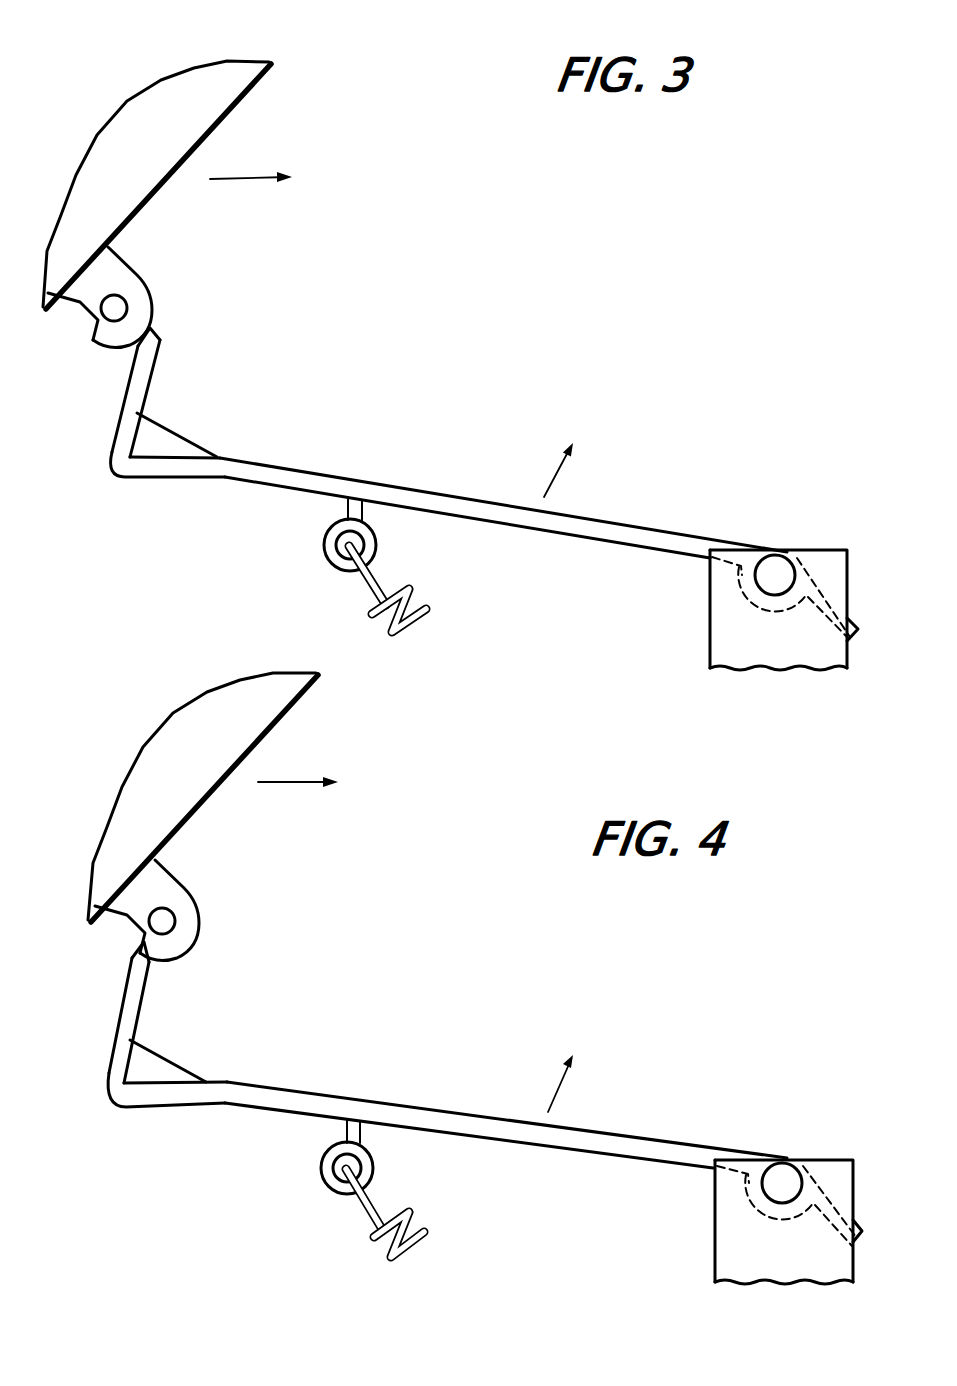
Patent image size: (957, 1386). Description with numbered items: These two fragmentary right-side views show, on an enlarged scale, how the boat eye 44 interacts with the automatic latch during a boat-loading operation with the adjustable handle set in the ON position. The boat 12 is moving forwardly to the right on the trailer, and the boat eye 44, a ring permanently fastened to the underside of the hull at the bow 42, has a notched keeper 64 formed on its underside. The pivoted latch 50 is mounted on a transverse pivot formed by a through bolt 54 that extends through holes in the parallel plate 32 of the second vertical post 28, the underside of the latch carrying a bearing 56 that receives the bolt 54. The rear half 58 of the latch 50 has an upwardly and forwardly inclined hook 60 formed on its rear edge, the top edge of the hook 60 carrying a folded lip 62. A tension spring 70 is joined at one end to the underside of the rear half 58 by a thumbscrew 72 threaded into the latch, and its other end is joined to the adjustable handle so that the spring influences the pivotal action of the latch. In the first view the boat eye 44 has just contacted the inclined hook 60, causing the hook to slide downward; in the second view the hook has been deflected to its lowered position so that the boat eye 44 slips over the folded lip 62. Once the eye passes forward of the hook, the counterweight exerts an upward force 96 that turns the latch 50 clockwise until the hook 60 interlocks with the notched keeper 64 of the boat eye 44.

In FIG. 3, the boat 12 is at (188, 167).
In FIG. 4, the boat 12 is at (235, 775).
In FIG. 3, the bow 42 is at (247, 100).
In FIG. 4, the bow 42 is at (298, 707).
In FIG. 3, the boat eye 44 is at (140, 277).
In FIG. 4, the boat eye 44 is at (192, 893).
In FIG. 3, the notched keeper 64 is at (92, 327).
In FIG. 4, the notched keeper 64 is at (130, 942).
In FIG. 3, the folded lip 62 is at (160, 350).
In FIG. 4, the folded lip 62 is at (154, 975).
In FIG. 3, the hook 60 is at (113, 430).
In FIG. 4, the hook 60 is at (112, 1010).
In FIG. 3, the pivoted latch 50 is at (682, 540).
In FIG. 4, the pivoted latch 50 is at (683, 1143).
In FIG. 4, the rear half 58 is at (623, 1137).
In FIG. 3, the upward force 96 is at (560, 472).
In FIG. 4, the upward force 96 is at (560, 1087).
In FIG. 3, the thumbscrew 72 is at (323, 537).
In FIG. 4, the thumbscrew 72 is at (320, 1175).
In FIG. 3, the tension spring 70 is at (417, 583).
In FIG. 4, the tension spring 70 is at (377, 1237).
In FIG. 3, the second vertical post 28 is at (765, 657).
In FIG. 4, the second vertical post 28 is at (797, 1270).
In FIG. 3, the parallel plate 32 is at (718, 657).
In FIG. 4, the parallel plate 32 is at (727, 1268).
In FIG. 3, the through bolt 54 is at (775, 573).
In FIG. 4, the through bolt 54 is at (782, 1180).
In FIG. 3, the bearing 56 is at (757, 613).
In FIG. 4, the bearing 56 is at (760, 1216).